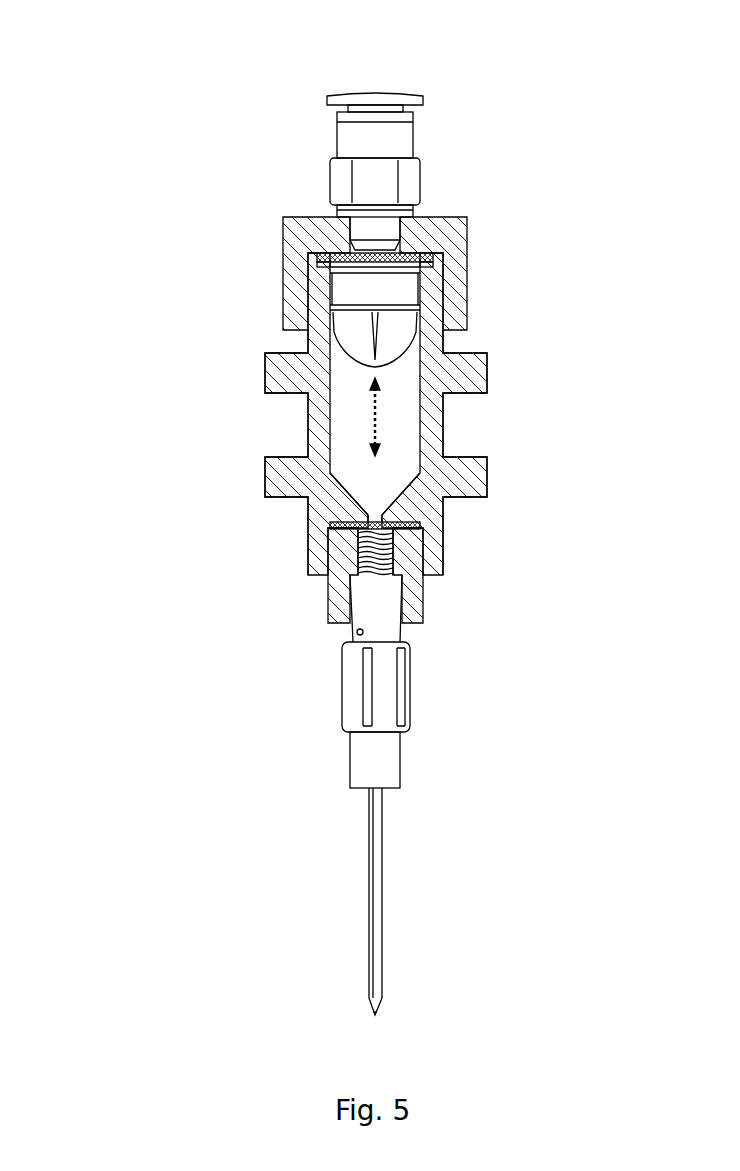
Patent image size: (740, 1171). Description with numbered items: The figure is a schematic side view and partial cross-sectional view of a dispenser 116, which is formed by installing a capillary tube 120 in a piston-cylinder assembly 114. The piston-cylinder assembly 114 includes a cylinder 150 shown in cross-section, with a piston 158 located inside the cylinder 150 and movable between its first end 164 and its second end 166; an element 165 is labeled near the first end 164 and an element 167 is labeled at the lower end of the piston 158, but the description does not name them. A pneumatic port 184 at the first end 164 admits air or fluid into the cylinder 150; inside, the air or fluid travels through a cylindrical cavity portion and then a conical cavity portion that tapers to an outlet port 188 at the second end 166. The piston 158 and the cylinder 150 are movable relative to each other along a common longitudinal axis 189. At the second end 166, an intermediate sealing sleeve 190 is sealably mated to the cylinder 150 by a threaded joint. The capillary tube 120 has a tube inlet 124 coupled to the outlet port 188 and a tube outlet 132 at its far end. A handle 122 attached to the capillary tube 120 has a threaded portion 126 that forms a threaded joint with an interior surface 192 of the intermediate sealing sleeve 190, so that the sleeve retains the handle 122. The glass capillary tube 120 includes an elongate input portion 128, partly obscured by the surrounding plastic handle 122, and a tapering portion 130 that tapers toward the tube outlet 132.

The piston-cylinder assembly 114 is at (193, 377).
The dispenser 116 is at (183, 88).
The capillary tube 120 is at (191, 758).
The handle 122 is at (339, 676).
The tube inlet 124 is at (360, 517).
The threaded portion 126 is at (356, 553).
The elongate input portion 128 is at (366, 860).
The tapering portion 130 is at (367, 1002).
The tube outlet 132 is at (370, 1018).
The cylinder 150 is at (489, 377).
The piston 158 is at (390, 338).
The first end 164 is at (392, 269).
The retaining ring 165 is at (338, 271).
The second end 166 is at (403, 518).
The valve needle tip 167 is at (365, 361).
The pneumatic port 184 is at (377, 86).
The outlet port 188 is at (381, 503).
The common longitudinal axis 189 is at (365, 405).
The intermediate sealing sleeve 190 is at (427, 600).
The interior surface 192 is at (346, 598).